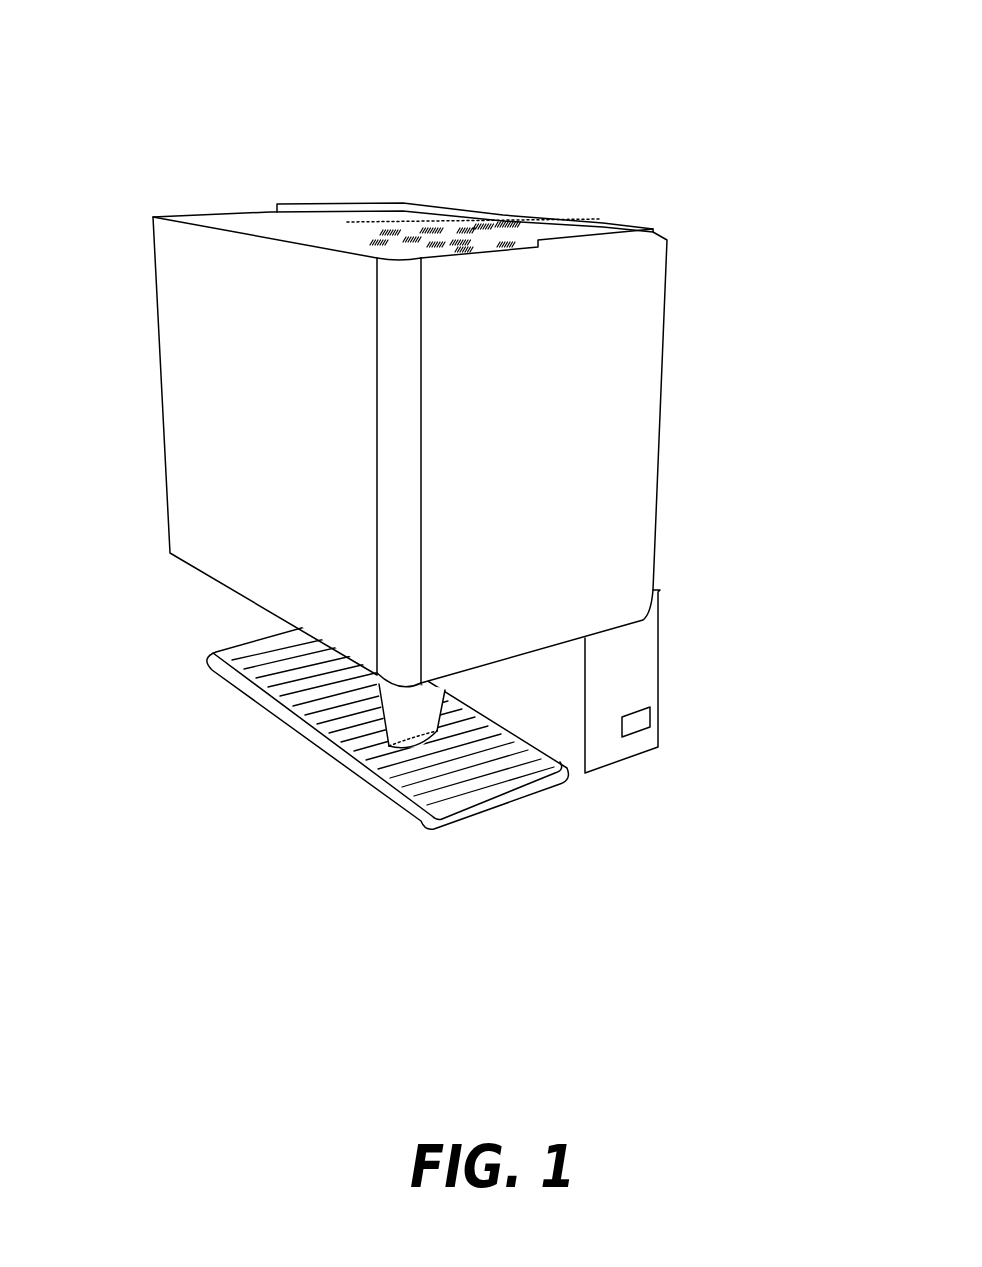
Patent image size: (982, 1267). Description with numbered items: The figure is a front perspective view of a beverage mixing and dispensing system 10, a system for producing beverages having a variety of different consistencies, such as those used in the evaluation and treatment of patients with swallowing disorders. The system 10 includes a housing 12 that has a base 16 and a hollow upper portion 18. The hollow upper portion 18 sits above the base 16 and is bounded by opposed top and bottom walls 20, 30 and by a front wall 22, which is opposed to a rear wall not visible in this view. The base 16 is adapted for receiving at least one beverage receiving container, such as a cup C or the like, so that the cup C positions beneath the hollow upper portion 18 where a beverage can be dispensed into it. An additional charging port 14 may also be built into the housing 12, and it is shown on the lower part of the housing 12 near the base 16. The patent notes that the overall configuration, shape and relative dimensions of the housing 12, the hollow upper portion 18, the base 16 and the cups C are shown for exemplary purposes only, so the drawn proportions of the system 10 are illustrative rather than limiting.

The beverage mixing and dispensing system 10 is at (436, 513).
The housing 12 is at (640, 334).
The charging port 14 is at (657, 713).
The base 16 is at (503, 800).
The hollow upper portion 18 is at (287, 284).
The top wall 20 is at (393, 218).
The front wall 22 is at (267, 453).
The bottom wall 30 is at (530, 674).
The cup C is at (322, 672).